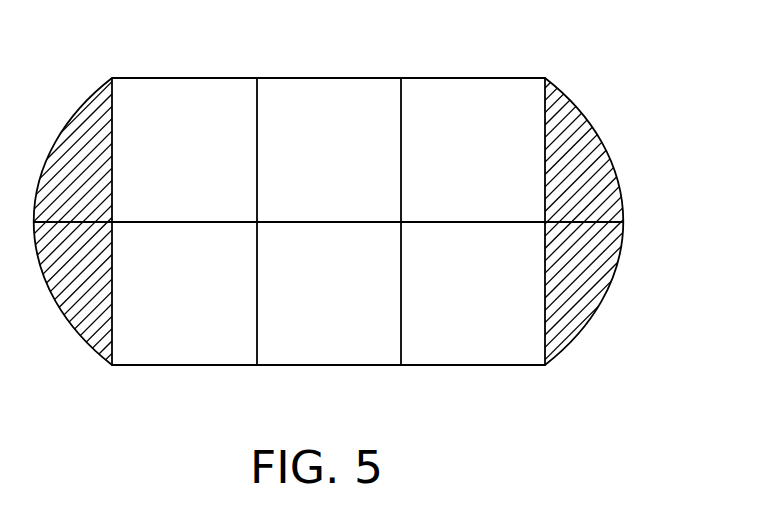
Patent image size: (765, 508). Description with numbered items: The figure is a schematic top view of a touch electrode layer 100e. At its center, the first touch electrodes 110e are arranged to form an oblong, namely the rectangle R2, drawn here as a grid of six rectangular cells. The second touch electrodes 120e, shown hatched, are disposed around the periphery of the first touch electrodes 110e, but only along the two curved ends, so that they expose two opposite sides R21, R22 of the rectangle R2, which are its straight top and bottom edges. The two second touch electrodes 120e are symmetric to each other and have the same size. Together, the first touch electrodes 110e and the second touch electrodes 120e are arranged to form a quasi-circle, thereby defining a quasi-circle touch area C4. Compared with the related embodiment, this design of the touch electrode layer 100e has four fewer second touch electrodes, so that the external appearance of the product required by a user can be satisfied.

The touch electrode layer 100e is at (382, 240).
The first touch electrodes 110e is at (503, 140).
The second touch electrodes 120e is at (382, 187).
The rectangle R2 is at (398, 212).
The first side of rectangle R21 is at (335, 66).
The second side of rectangle R22 is at (348, 368).
The quasi-circle touch area C4 is at (560, 36).